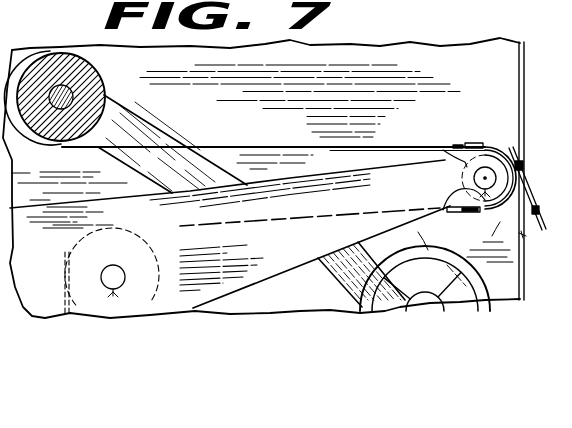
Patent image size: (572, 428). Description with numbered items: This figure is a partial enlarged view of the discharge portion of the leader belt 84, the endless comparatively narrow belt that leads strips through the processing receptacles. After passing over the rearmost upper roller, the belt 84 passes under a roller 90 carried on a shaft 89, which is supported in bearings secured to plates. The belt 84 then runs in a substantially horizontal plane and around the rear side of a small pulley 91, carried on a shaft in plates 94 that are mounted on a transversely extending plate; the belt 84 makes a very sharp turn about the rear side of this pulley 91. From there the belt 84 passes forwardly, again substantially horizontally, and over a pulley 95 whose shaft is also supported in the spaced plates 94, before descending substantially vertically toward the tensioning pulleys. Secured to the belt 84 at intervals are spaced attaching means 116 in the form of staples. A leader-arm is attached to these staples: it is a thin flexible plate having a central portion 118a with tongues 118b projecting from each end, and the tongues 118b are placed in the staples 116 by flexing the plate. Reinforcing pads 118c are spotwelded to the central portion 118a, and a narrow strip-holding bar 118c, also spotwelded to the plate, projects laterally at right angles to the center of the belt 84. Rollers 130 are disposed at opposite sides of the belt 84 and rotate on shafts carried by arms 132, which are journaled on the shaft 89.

The leader belt 84 is at (279, 123).
The shaft 89 is at (58, 88).
The roller 90 is at (100, 77).
The small pulley 91 is at (432, 148).
The plates 94 is at (297, 266).
The pulley 95 is at (156, 258).
The attaching means 116 is at (465, 142).
The central portion 118a is at (496, 140).
The tongues 118b is at (540, 216).
The strip-holding bar 118c is at (524, 168).
The rollers 130 is at (485, 281).
The arms 132 is at (147, 128).